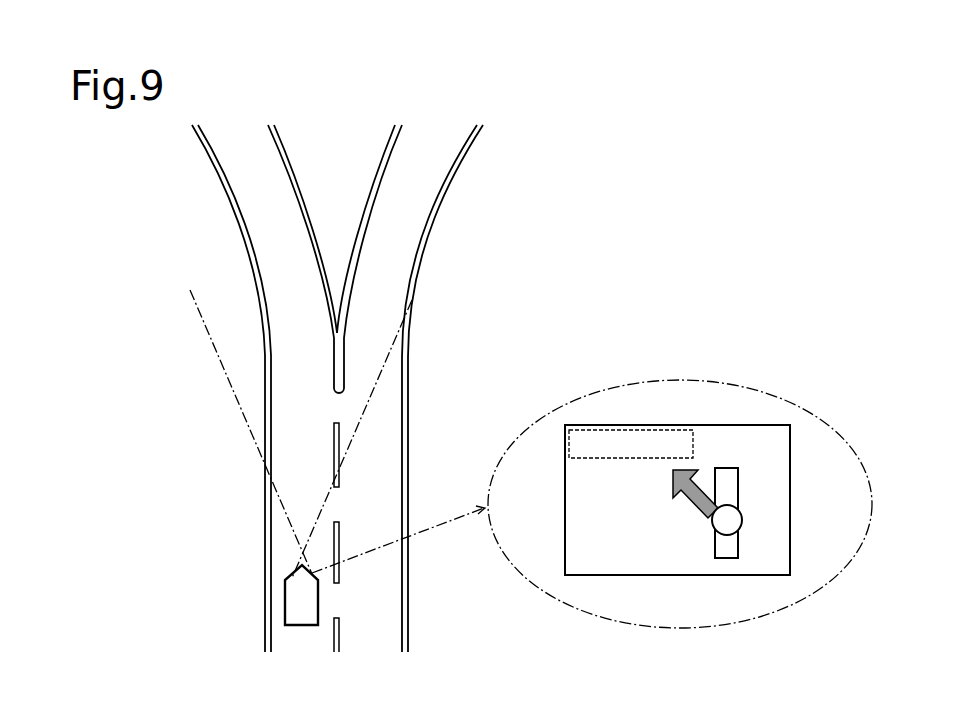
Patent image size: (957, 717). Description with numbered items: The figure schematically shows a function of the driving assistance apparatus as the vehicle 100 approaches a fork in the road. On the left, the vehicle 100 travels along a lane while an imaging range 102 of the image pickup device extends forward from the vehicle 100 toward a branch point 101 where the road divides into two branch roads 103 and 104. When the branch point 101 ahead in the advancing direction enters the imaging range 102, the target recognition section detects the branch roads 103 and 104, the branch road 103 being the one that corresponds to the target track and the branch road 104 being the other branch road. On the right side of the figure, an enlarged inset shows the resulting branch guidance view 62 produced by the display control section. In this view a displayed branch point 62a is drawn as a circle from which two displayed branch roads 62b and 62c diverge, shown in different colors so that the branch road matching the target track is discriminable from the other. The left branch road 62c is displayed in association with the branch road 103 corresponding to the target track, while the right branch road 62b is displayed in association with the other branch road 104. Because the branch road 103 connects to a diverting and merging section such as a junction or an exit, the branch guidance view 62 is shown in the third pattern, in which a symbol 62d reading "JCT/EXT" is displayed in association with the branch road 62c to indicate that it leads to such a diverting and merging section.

The vehicle 100 is at (285, 597).
The branch point 101 is at (337, 405).
The imaging range 102 is at (366, 406).
The branch road 103 is at (270, 173).
The branch road 104 is at (448, 168).
The branch guidance view 62 is at (565, 505).
The branch point 62a is at (742, 520).
The branch road 62b is at (738, 480).
The branch road 62c is at (690, 500).
The symbol 62d is at (569, 455).